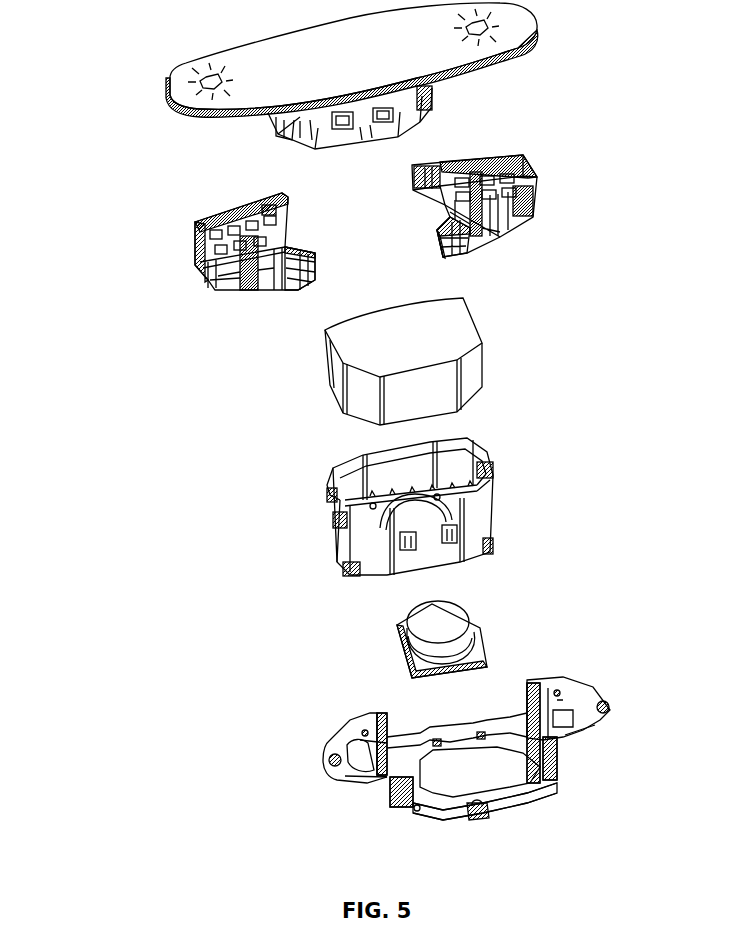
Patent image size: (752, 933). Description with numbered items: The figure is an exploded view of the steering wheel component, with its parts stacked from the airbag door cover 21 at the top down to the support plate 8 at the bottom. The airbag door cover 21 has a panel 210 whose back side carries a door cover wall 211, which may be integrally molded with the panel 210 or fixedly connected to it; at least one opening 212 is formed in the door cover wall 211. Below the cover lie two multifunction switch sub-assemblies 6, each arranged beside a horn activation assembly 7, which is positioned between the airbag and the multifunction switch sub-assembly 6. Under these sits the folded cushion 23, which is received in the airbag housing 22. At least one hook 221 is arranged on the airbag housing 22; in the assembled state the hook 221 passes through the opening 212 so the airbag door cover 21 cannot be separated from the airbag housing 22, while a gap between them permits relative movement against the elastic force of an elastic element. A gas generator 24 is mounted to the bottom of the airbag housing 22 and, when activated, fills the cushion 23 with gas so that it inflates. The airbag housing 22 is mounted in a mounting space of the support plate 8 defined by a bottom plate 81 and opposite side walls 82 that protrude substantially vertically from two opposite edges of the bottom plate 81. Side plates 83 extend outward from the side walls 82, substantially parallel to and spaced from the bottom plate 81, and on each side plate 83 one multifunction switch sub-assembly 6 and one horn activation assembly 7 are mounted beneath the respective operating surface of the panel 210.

The airbag door cover 21 is at (143, 108).
The panel 210 is at (420, 52).
The door cover wall 211 is at (422, 110).
The opening 212 is at (335, 127).
The multifunction switch sub-assembly 6 is at (195, 279).
The horn activation assembly 7 is at (278, 290).
The folded cushion 23 is at (493, 378).
The airbag housing 22 is at (503, 525).
The hook 221 is at (397, 552).
The gas generator 24 is at (508, 632).
The support plate 8 is at (595, 750).
The bottom plate 81 is at (507, 800).
The side wall 82 is at (397, 727).
The side plate 83 is at (347, 743).